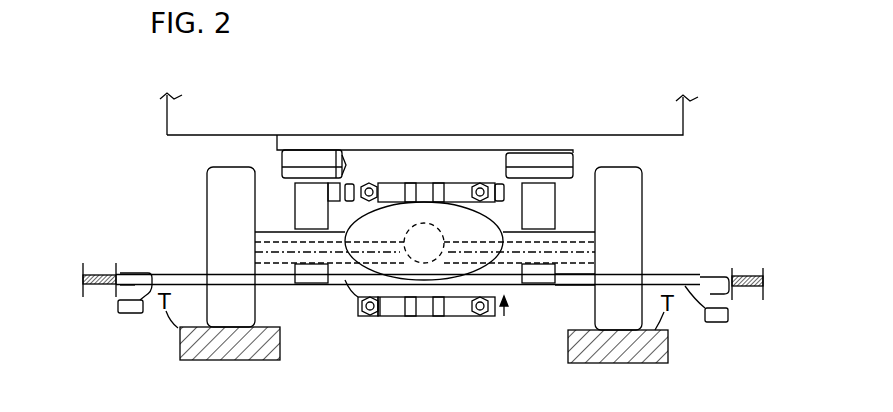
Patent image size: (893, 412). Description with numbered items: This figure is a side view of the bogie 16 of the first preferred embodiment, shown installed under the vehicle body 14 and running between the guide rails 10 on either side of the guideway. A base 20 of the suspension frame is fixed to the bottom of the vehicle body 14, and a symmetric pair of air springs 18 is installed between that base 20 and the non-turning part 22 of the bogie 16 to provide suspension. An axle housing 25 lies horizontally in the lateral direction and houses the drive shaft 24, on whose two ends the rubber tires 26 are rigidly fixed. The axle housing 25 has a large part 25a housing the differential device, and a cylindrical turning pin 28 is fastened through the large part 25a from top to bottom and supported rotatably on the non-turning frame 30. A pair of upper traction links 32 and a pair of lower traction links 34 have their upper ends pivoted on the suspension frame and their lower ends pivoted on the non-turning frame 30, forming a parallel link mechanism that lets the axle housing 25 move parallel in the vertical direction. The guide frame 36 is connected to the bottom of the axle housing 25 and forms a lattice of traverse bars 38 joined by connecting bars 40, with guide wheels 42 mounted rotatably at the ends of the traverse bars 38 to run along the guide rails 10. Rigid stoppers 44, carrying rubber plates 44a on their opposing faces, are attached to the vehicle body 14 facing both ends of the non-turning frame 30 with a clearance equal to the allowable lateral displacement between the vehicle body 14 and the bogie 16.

The guide rail 10 is at (766, 283).
The vehicle body 14 is at (685, 117).
The bogie 16 is at (78, 286).
The air spring 18 is at (282, 160).
The base 20 is at (565, 146).
The non-turning part 22 is at (297, 193).
The drive shaft 24 is at (272, 243).
The axle housing 25 is at (336, 288).
The large part 25a is at (385, 318).
The rubber tire 26 is at (215, 262).
The turning pin 28 is at (425, 183).
The non-turning frame 30 is at (452, 183).
The upper traction link 32 is at (373, 186).
The lower traction link 34 is at (366, 318).
The guide frame 36 is at (504, 316).
The traverse bar 38 is at (572, 290).
The connecting bar 40 is at (311, 285).
The guide wheel 42 is at (116, 304).
The rigid stopper 44 is at (340, 178).
The rubber plate 44a is at (352, 183).